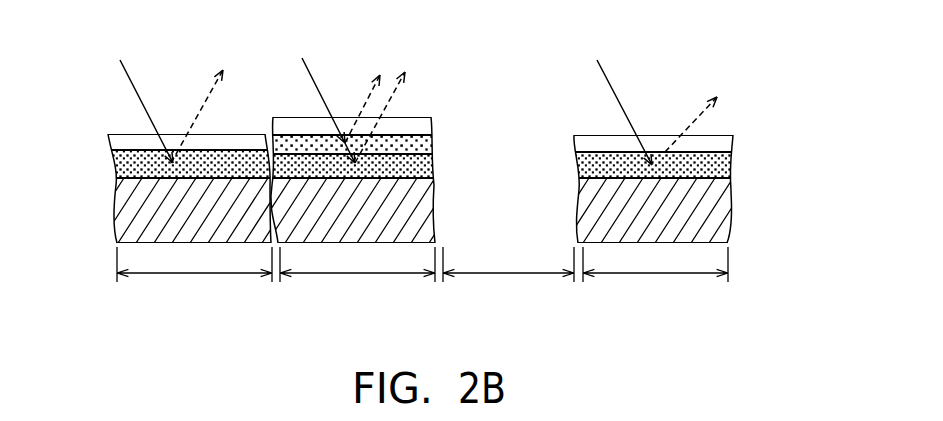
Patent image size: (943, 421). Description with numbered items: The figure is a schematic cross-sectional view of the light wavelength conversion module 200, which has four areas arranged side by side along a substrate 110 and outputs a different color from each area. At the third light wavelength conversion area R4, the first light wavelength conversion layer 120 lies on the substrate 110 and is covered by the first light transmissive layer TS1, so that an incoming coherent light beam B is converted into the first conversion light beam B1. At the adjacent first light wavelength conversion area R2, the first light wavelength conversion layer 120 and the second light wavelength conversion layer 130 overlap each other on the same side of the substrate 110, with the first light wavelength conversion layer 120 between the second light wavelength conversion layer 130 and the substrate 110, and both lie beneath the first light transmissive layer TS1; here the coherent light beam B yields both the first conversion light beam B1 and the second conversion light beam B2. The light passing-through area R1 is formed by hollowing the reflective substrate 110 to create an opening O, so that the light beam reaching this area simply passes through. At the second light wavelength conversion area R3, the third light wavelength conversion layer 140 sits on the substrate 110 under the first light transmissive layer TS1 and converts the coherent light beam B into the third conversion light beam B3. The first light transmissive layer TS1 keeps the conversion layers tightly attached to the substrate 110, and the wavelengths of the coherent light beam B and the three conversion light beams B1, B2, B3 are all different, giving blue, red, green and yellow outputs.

The substrate 110 is at (133, 210).
The first light wavelength conversion layer 120 is at (133, 163).
The second light wavelength conversion layer 130 is at (413, 144).
The third light wavelength conversion layer 140 is at (713, 165).
The first light transmissive layer TS1 is at (122, 145).
The coherent light beam B is at (382, 97).
The first conversion light beam B1 is at (298, 102).
The second conversion light beam B2 is at (363, 94).
The third conversion light beam B3 is at (702, 110).
The opening O is at (566, 199).
The light passing-through area R1 is at (508, 281).
The first light wavelength conversion area R2 is at (357, 281).
The second light wavelength conversion area R3 is at (655, 281).
The third light wavelength conversion area R4 is at (194, 281).
The light wavelength conversion module 200 is at (813, 367).